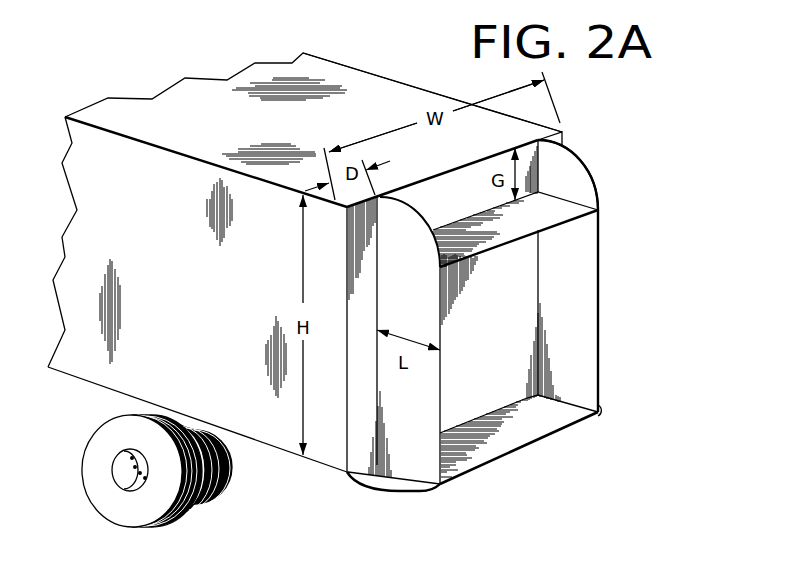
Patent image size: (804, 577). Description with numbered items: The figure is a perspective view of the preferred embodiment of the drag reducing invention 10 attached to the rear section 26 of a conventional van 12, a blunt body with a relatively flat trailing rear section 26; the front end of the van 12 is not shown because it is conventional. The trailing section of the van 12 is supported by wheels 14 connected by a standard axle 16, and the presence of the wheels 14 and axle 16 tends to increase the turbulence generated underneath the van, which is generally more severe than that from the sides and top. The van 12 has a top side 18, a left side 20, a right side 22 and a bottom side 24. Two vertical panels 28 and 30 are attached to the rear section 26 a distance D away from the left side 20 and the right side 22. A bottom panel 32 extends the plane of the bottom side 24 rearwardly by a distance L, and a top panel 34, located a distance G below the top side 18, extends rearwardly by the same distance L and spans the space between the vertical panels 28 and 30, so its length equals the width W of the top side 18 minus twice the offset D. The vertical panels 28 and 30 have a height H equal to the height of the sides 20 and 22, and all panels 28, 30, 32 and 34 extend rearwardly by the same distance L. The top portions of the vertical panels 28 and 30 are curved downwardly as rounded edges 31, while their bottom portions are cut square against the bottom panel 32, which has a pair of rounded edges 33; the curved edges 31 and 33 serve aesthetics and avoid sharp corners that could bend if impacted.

The drag reducing invention 10 is at (606, 266).
The van 12 is at (401, 54).
The wheels 14 is at (179, 512).
The axle 16 is at (233, 445).
The top side 18 is at (260, 134).
The left side 20 is at (149, 273).
The right side 22 is at (366, 70).
The bottom side 24 is at (324, 466).
The rear section 26 is at (465, 334).
The vertical panel 28 is at (394, 308).
The vertical panel 30 is at (551, 304).
The rounded edges 31 is at (418, 212).
The bottom panel 32 is at (495, 434).
The rounded edges 33 is at (424, 491).
The top panel 34 is at (489, 234).